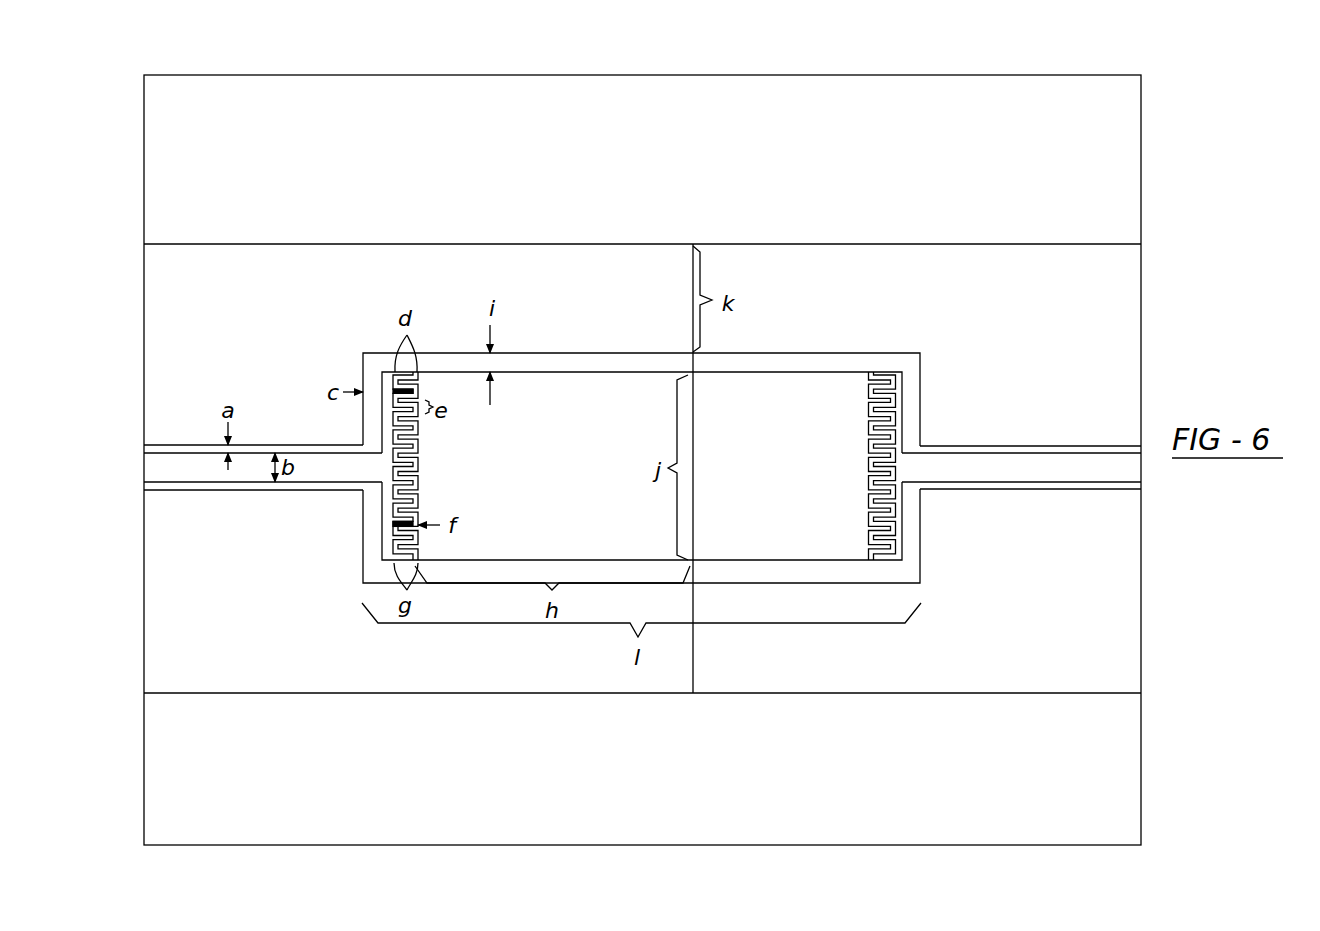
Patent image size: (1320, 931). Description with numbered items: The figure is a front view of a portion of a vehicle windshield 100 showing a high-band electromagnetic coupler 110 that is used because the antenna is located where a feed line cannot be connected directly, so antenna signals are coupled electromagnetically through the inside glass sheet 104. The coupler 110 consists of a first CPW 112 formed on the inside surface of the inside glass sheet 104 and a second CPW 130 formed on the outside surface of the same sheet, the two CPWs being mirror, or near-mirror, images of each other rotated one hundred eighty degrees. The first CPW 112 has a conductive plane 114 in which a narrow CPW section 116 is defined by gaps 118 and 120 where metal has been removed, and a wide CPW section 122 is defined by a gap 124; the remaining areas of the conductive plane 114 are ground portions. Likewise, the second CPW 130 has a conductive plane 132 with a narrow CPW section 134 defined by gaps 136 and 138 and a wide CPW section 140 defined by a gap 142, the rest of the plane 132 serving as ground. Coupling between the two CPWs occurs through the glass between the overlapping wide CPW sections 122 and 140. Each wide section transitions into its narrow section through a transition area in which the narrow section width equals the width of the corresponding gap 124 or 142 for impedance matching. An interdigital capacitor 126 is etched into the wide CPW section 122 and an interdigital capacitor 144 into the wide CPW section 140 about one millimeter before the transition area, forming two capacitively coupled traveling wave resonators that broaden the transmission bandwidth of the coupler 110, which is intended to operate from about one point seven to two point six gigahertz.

The vehicle windshield 100 is at (1010, 46).
The inside glass sheet 104 is at (711, 113).
The electromagnetic coupler 110 is at (797, 197).
The first CPW 112 is at (917, 205).
The conductive plane 114 is at (1028, 280).
The narrow CPW section 116 is at (1058, 465).
The gap 118 is at (958, 447).
The gap 120 is at (986, 485).
The wide CPW section 122 is at (762, 405).
The gap 124 is at (852, 360).
The interdigital capacitor 126 is at (870, 452).
The second CPW 130 is at (608, 217).
The conductive plane 132 is at (280, 260).
The narrow CPW section 134 is at (257, 450).
The gap 136 is at (178, 447).
The gap 138 is at (245, 485).
The wide CPW section 140 is at (596, 395).
The gap 142 is at (538, 350).
The interdigital capacitor 144 is at (420, 452).